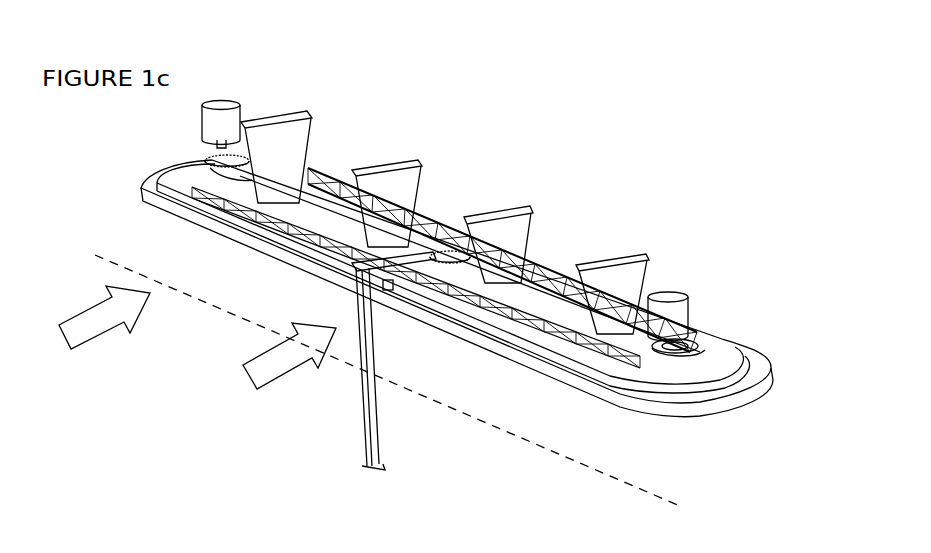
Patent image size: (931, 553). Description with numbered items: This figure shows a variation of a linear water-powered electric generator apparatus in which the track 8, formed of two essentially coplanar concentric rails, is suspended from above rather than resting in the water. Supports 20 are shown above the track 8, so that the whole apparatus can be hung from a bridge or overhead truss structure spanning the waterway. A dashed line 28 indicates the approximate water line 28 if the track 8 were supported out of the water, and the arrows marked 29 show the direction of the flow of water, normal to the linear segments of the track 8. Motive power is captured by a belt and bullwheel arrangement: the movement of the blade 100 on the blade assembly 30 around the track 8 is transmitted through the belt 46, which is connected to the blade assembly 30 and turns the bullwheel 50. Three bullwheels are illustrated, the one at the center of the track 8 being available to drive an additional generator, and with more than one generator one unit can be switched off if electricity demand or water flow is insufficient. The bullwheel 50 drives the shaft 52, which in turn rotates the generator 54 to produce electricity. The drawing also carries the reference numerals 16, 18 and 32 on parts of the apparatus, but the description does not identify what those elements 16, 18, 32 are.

The track 8 is at (147, 233).
The base plate 16 is at (707, 343).
The conveyor track 18 is at (544, 320).
The supports 20 is at (644, 272).
The water line 28 is at (559, 461).
The arrows 29 is at (236, 374).
The blade assembly 30 is at (358, 277).
The mounting block 32 is at (388, 293).
The belt 46 is at (455, 275).
The bullwheel 50 is at (662, 353).
The shaft 52 is at (673, 348).
The generator 54 is at (699, 341).
The blade 100 is at (362, 403).